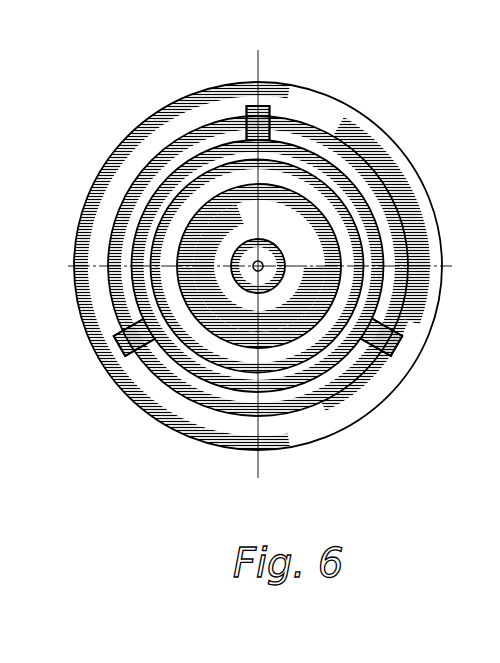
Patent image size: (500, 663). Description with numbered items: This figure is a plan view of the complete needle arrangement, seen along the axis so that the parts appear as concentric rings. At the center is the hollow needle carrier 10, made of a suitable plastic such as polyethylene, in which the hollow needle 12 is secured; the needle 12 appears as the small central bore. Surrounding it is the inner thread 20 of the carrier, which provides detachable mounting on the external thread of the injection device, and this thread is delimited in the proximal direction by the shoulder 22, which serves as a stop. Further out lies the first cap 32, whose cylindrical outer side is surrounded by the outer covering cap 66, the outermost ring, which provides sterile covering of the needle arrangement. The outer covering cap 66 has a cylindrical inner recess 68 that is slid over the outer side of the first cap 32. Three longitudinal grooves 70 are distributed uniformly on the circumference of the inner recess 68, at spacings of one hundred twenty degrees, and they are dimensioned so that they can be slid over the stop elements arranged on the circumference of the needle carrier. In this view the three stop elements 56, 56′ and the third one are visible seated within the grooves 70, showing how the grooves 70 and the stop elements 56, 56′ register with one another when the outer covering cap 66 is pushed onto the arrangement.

The hollow needle carrier 10 is at (239, 312).
The hollow needle 12 is at (266, 266).
The inner thread 20 is at (228, 187).
The shoulder 22 is at (190, 203).
The first cap 32 is at (375, 188).
The outer covering cap 66 is at (352, 113).
The cylindrical inner recess 68 is at (395, 223).
The stop element 56 is at (268, 105).
The stop element 56′ is at (373, 365).
The longitudinal grooves 70 is at (246, 107).